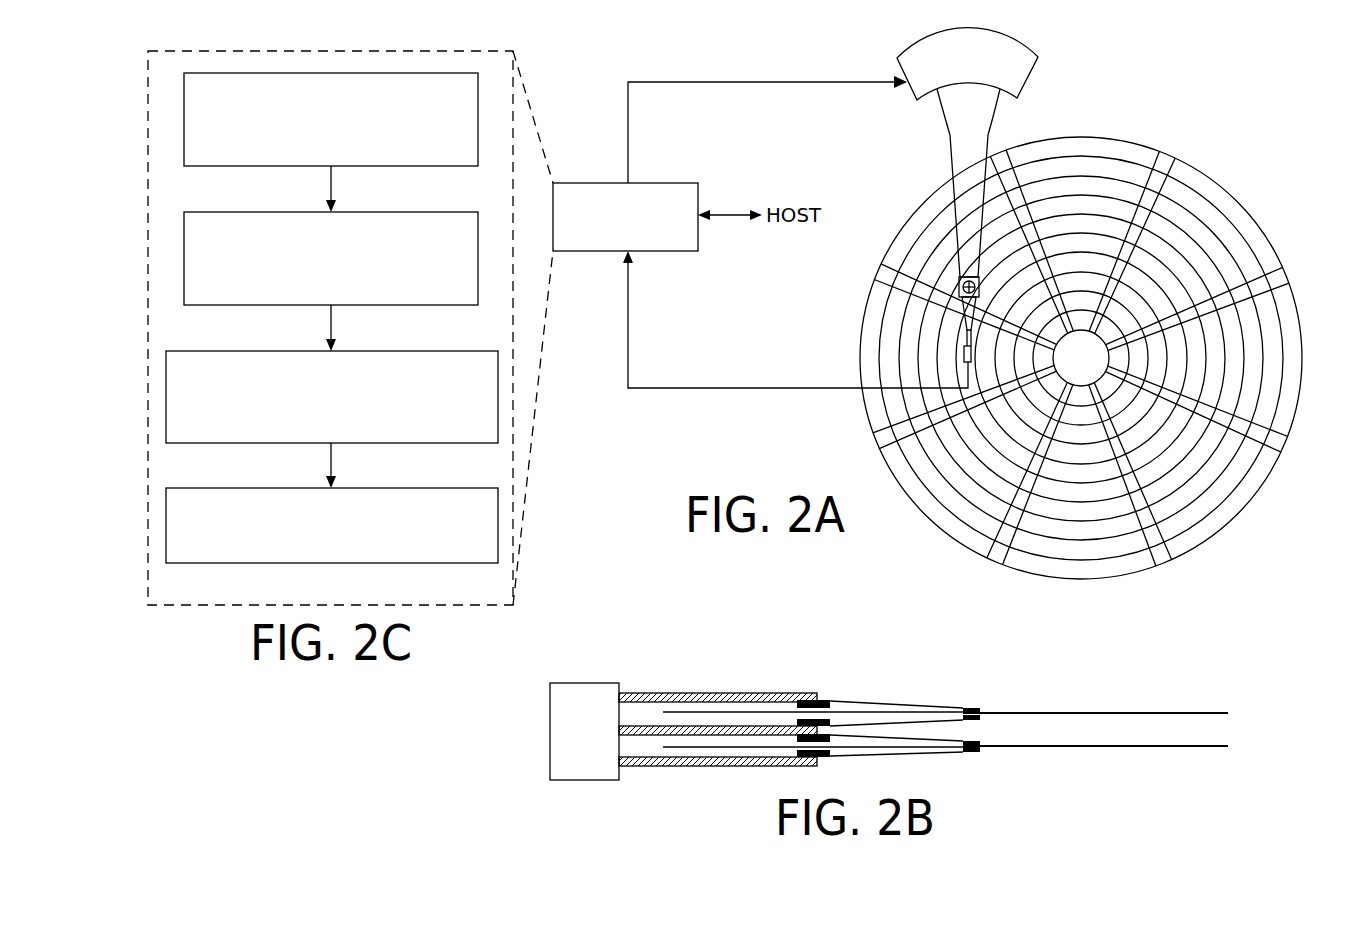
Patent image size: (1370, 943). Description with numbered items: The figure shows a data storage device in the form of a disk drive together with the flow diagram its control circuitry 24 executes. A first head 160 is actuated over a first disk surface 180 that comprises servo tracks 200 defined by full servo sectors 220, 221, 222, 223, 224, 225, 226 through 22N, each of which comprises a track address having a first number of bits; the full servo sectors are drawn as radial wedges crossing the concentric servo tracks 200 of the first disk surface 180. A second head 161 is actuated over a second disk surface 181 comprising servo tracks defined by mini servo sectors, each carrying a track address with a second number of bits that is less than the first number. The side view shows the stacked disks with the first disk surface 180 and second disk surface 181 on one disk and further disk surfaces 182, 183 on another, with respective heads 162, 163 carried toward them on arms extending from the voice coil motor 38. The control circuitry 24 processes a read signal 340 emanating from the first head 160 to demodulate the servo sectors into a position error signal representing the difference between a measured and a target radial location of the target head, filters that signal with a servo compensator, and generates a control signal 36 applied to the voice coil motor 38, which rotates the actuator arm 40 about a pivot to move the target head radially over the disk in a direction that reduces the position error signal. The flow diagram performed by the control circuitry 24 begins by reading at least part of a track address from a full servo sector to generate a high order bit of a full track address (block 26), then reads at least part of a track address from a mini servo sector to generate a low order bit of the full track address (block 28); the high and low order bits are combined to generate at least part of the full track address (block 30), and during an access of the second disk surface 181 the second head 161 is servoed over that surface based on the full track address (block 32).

In FIG. 2A, the first head 160 is at (952, 349).
In FIG. 2B, the first head 160 is at (980, 708).
In FIG. 2B, the second head 161 is at (980, 717).
In FIG. 2B, the head 162 is at (980, 742).
In FIG. 2B, the head 163 is at (980, 751).
In FIG. 2A, the first disk surface 180 is at (1240, 184).
In FIG. 2B, the first disk surface 180 is at (1120, 712).
In FIG. 2B, the second disk surface 181 is at (1166, 714).
In FIG. 2B, the disk surface 182 is at (1150, 745).
In FIG. 2B, the disk surface 183 is at (1166, 747).
In FIG. 2A, the servo tracks 200 is at (1090, 165).
In FIG. 2A, the full servo sector 220 is at (1167, 160).
In FIG. 2A, the full servo sector 221 is at (1286, 276).
In FIG. 2A, the full servo sector 222 is at (1286, 447).
In FIG. 2A, the full servo sector 223 is at (1161, 568).
In FIG. 2A, the full servo sector 224 is at (995, 562).
In FIG. 2A, the full servo sector 225 is at (880, 440).
In FIG. 2A, the full servo sector 226 is at (883, 268).
In FIG. 2A, the full servo sector 22N is at (1012, 158).
In FIG. 2A, the control circuitry 24 is at (663, 183).
In FIG. 2C, the block 26 is at (460, 166).
In FIG. 2C, the block 28 is at (447, 305).
In FIG. 2C, the block 30 is at (455, 443).
In FIG. 2C, the block 32 is at (455, 563).
In FIG. 2A, the read signal 340 is at (755, 388).
In FIG. 2A, the control signal 36 is at (628, 116).
In FIG. 2A, the voice coil motor 38 is at (914, 100).
In FIG. 2B, the voice coil motor 38 is at (584, 683).
In FIG. 2A, the actuator arm 40 is at (952, 166).